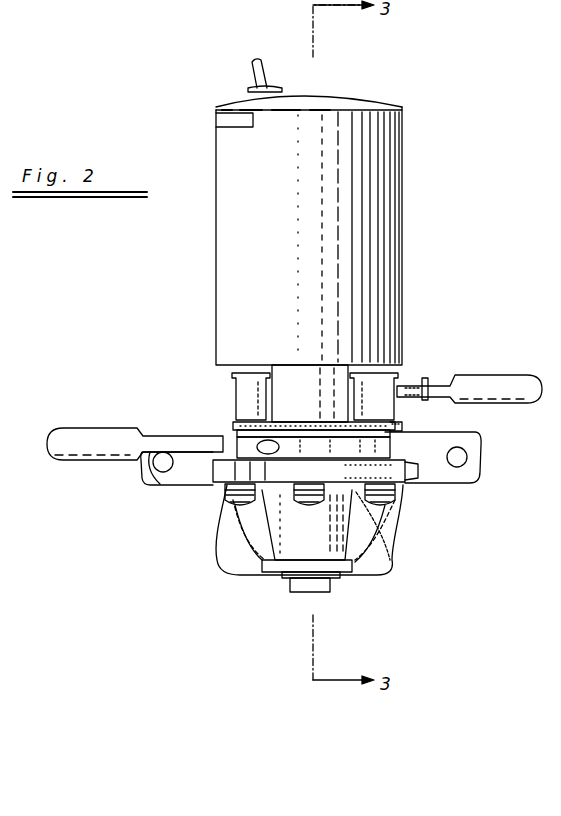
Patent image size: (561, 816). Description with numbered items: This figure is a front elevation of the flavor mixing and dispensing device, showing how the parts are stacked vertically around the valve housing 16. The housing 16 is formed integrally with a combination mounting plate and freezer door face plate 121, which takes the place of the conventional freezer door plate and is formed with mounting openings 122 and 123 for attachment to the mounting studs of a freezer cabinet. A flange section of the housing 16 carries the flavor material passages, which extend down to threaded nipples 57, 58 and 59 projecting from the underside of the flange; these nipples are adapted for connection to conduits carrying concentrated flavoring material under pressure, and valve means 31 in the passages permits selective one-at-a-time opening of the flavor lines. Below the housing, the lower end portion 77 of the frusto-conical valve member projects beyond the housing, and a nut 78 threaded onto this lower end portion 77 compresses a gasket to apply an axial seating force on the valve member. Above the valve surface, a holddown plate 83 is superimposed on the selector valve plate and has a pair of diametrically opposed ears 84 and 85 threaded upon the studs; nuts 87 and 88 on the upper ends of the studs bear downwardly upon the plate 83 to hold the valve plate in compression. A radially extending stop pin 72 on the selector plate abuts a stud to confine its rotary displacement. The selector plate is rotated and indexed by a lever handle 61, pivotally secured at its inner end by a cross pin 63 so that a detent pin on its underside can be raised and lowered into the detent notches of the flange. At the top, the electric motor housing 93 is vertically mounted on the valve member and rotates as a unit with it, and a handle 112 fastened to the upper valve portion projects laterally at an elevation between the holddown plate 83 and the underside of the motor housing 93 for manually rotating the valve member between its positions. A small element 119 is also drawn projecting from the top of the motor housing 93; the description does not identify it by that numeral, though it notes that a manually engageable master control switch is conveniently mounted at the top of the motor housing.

The valve housing 16 is at (277, 536).
The valve means 31 is at (305, 492).
The threaded nipple 57 is at (385, 532).
The threaded nipple 58 is at (308, 492).
The threaded nipple 59 is at (235, 492).
The handle 61 is at (97, 440).
The cross pin 63 is at (212, 462).
The stop pin 72 is at (268, 446).
The lower end portion 77 is at (306, 592).
The nut 78 is at (345, 575).
The holddown plate 83 is at (312, 422).
The ear 84 is at (397, 428).
The ear 85 is at (236, 426).
The nut 87 is at (248, 402).
The nut 88 is at (385, 392).
The electric motor housing 93 is at (380, 235).
The handle 112 is at (506, 384).
The lever 119 is at (248, 70).
The combination mounting plate and freezer door face plate 121 is at (390, 530).
The mounting opening 122 is at (163, 470).
The mounting opening 123 is at (460, 468).